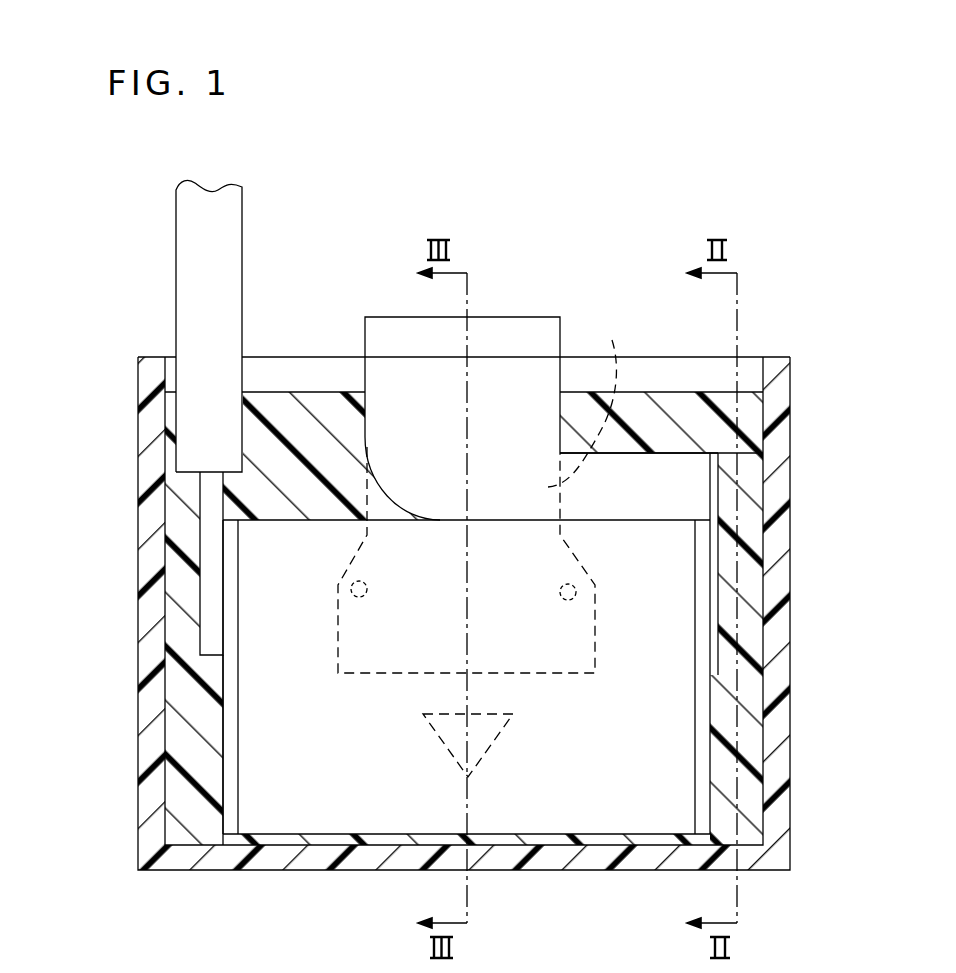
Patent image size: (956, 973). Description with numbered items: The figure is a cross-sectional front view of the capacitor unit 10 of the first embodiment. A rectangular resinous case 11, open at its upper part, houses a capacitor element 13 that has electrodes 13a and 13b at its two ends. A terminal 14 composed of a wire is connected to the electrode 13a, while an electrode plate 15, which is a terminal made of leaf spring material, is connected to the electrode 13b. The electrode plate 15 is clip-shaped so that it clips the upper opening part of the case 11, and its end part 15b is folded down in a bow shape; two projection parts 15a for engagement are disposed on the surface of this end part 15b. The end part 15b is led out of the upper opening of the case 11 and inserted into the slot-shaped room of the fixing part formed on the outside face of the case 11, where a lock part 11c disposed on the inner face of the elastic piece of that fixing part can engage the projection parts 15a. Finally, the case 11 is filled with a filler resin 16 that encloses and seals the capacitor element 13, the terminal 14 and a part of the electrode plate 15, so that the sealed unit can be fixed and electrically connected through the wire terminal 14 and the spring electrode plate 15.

The capacitor unit 10 is at (130, 523).
The case 11 is at (147, 433).
The lock part 11c is at (483, 740).
The capacitor element 13 is at (553, 815).
The electrode 13a is at (230, 677).
The electrode 13b is at (703, 702).
The terminal 14 is at (223, 295).
The electrode plate 15 is at (528, 336).
The projection parts 15a is at (578, 592).
The end part 15b is at (594, 398).
The filler resin 16 is at (745, 418).